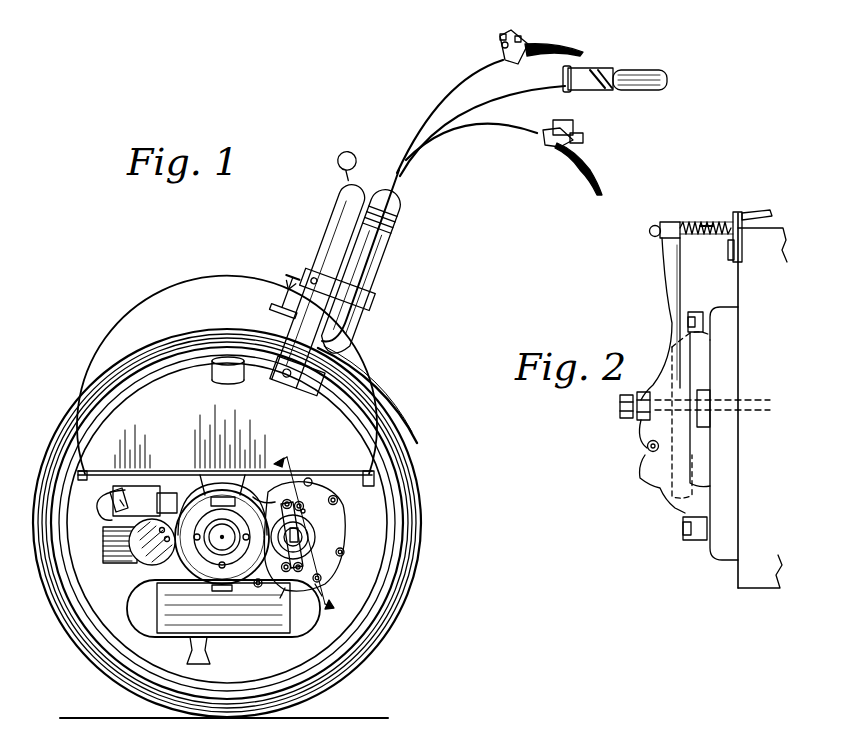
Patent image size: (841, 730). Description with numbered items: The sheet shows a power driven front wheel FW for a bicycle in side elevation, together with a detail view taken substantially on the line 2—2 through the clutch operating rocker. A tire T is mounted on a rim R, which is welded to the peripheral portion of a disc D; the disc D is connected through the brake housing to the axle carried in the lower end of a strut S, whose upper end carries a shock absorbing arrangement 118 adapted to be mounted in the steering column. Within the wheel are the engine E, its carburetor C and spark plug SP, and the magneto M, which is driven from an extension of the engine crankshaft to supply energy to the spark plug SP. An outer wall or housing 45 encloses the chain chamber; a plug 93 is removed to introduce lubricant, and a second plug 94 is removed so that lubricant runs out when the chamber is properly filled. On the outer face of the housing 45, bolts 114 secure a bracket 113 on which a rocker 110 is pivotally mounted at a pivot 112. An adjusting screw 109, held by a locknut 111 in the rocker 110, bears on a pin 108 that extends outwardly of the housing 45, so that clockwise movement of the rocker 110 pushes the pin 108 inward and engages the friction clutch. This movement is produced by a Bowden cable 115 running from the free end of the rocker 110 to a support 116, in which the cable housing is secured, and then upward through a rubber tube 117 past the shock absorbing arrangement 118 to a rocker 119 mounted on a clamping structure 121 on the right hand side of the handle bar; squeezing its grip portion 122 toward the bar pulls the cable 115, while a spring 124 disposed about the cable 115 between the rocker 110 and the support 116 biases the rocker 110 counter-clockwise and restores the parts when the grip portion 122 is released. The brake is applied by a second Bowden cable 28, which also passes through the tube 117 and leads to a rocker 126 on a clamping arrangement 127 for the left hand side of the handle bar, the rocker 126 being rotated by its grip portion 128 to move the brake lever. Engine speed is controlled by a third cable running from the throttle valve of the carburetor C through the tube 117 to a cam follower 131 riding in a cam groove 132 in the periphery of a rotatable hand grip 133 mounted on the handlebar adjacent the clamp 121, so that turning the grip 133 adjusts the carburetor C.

In FIG. 1, the tire T is at (107, 373).
In FIG. 1, the rim R is at (333, 662).
In FIG. 1, the disc D is at (100, 612).
In FIG. 1, the front wheel FW is at (420, 578).
In FIG. 1, the strut S is at (270, 340).
In FIG. 1, the magneto M is at (190, 576).
In FIG. 1, the engine E is at (110, 558).
In FIG. 1, the carburetor C is at (140, 566).
In FIG. 1, the spark plug SP is at (110, 513).
In FIG. 1, the line 2— 2 is at (309, 530).
In FIG. 1, the Bowden cable 28 is at (461, 128).
In FIG. 1, the wall (housing) 45 is at (340, 528).
In FIG. 2, the wall (housing) 45 is at (722, 547).
In FIG. 1, the plug 93 is at (303, 511).
In FIG. 1, the plug 94 is at (273, 583).
In FIG. 2, the pin 108 is at (700, 408).
In FIG. 2, the adjusting screw 109 is at (620, 407).
In FIG. 1, the rocker 110 is at (290, 492).
In FIG. 2, the rocker 110 is at (666, 320).
In FIG. 2, the locknut 111 is at (638, 415).
In FIG. 2, the pivot 112 is at (648, 449).
In FIG. 2, the bracket 113 is at (668, 470).
In FIG. 2, the bolts 114 is at (690, 312).
In FIG. 1, the Bowden cable 115 is at (253, 497).
In FIG. 2, the Bowden cable 115 is at (702, 222).
In FIG. 2, the support 116 is at (738, 212).
In FIG. 1, the rubber tube 117 is at (330, 338).
In FIG. 1, the shock absorbing arrangement 118 is at (388, 249).
In FIG. 1, the rocker 119 is at (513, 60).
In FIG. 1, the clamping structure 121 is at (502, 36).
In FIG. 1, the grip portion 122 is at (560, 50).
In FIG. 2, the spring 124 is at (703, 232).
In FIG. 1, the rocker 126 is at (562, 147).
In FIG. 1, the clamping arrangement 127 is at (574, 125).
In FIG. 1, the grip portion 128 is at (597, 178).
In FIG. 1, the cam follower 131 is at (578, 88).
In FIG. 1, the cam groove 132 is at (597, 72).
In FIG. 1, the rotatable hand grip 133 is at (660, 90).